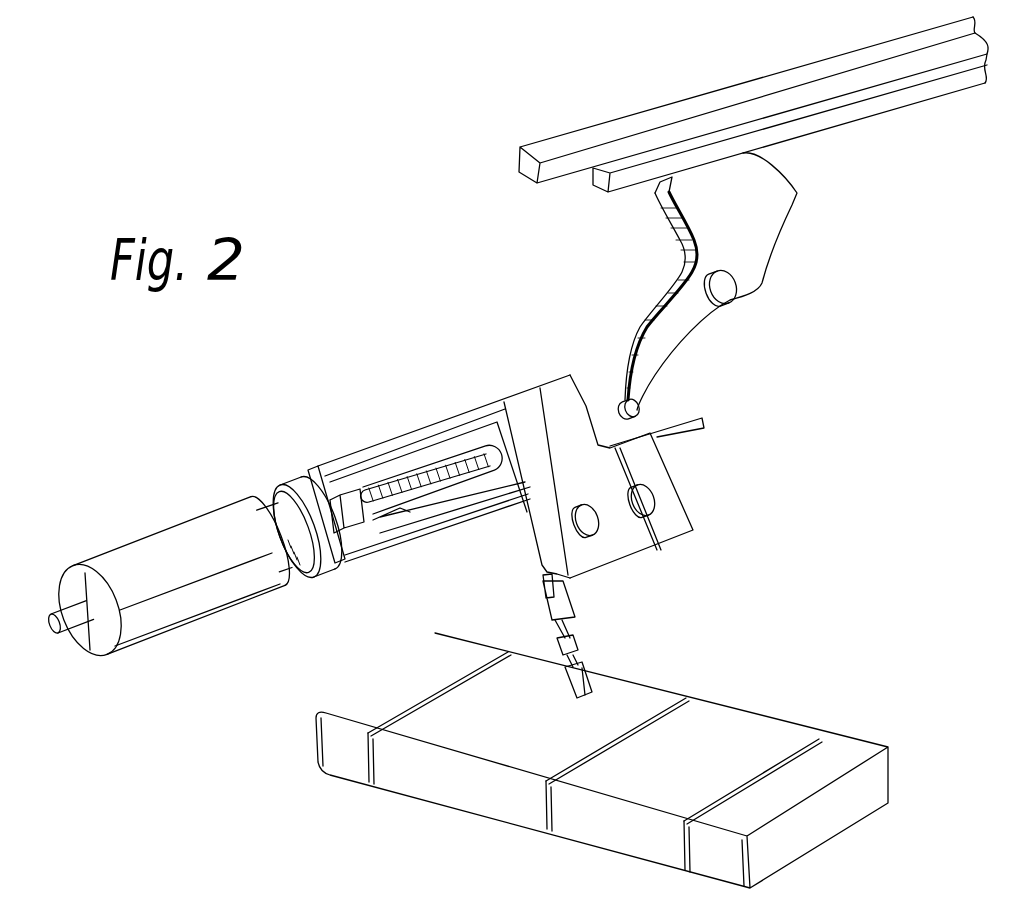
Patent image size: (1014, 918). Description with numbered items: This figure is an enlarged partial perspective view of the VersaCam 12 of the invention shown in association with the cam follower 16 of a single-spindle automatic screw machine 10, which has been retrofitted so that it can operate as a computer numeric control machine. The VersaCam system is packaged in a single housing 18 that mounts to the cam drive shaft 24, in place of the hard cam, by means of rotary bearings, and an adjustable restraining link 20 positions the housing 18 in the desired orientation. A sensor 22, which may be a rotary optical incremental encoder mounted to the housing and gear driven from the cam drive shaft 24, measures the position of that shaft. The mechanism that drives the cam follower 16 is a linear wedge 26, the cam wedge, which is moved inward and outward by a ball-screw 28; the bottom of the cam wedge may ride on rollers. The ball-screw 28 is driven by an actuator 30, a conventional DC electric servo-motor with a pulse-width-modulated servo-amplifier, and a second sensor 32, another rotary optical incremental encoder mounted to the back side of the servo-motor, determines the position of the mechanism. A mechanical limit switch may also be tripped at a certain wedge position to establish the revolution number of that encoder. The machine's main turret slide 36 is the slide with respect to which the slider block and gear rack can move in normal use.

The single-spindle automatic screw machine 10 is at (855, 832).
The VersaCam 12 is at (336, 596).
The cam follower 16 is at (658, 343).
The housing 18 is at (288, 470).
The adjustable restraining link 20 is at (579, 610).
The sensor 22 is at (600, 523).
The cam drive shaft 24 is at (657, 500).
The linear wedge 26 is at (658, 415).
The ball-screw 28 is at (453, 462).
The actuator 30 is at (172, 633).
The sensor 32 is at (62, 631).
The main turret slide 36 is at (943, 63).